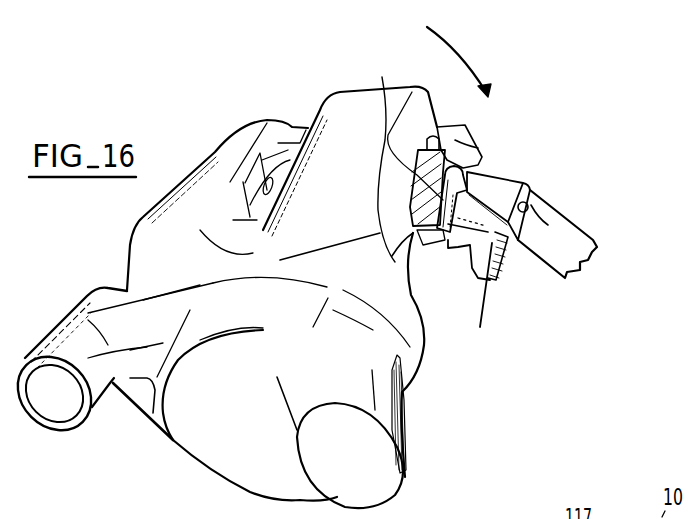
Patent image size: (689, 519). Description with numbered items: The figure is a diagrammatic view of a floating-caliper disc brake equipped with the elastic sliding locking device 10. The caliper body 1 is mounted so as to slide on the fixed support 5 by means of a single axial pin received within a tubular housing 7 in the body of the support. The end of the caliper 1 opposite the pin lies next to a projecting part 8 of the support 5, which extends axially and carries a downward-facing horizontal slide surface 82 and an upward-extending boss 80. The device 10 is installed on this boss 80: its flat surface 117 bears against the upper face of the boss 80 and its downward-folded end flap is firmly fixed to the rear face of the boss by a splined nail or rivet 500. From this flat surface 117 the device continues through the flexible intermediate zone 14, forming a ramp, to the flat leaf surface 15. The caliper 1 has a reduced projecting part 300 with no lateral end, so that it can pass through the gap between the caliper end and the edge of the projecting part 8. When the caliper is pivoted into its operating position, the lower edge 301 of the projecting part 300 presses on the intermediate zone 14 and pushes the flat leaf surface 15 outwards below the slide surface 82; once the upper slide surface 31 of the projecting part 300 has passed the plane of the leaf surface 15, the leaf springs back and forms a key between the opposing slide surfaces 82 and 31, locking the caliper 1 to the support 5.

The caliper body 1 is at (256, 114).
The fixed support 5 is at (542, 278).
The tubular housing 7 is at (60, 315).
The projecting part 8 is at (584, 232).
The elastic sliding locking device 10 is at (517, 166).
The intermediate zone 14 is at (382, 86).
The flat leaf surface 15 is at (395, 258).
The upper slide surface 31 is at (477, 150).
The boss 80 is at (487, 228).
The slide surface 82 is at (456, 257).
The flat surface 117 is at (532, 188).
The projecting part of the caliper 300 is at (470, 125).
The lower edge 301 is at (480, 165).
The splined nail or rivet 500 is at (535, 222).